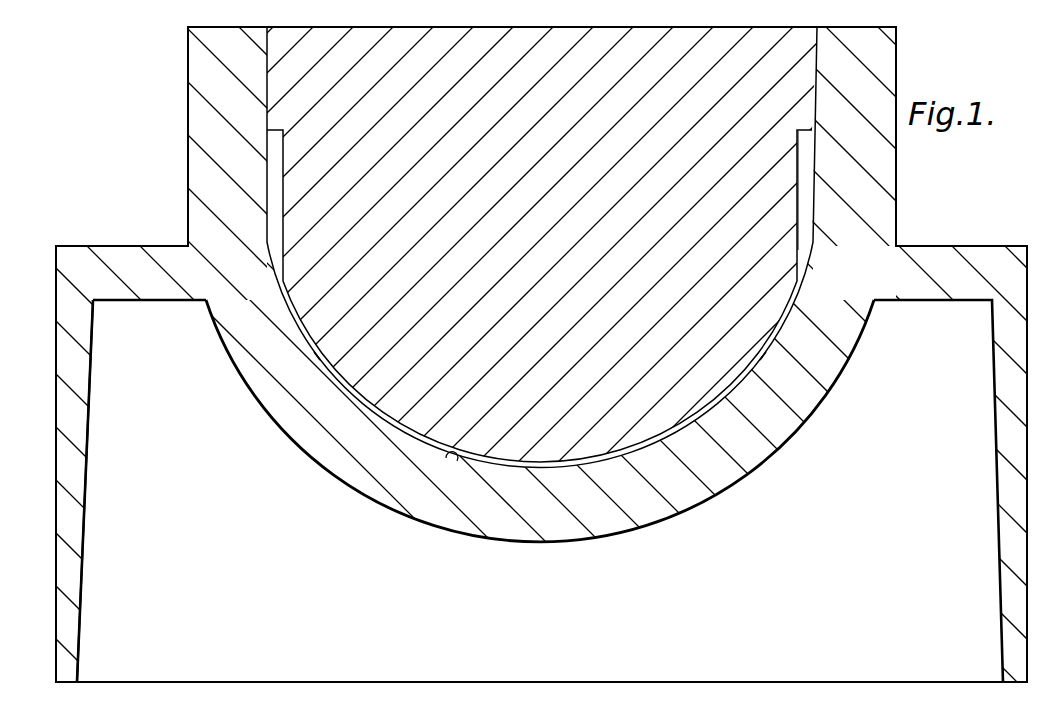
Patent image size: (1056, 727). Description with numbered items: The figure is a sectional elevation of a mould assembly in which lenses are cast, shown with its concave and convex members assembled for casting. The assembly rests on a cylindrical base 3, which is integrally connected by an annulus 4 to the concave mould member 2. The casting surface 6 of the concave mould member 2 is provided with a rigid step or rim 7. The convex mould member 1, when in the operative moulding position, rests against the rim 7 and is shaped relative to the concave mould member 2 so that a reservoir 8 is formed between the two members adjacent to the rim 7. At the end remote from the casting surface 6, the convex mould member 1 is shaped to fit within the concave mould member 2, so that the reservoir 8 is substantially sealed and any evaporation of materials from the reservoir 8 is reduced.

The convex mould member 1 is at (353, 116).
The concave mould member 2 is at (324, 450).
The cylindrical base 3 is at (68, 357).
The annulus 4 is at (132, 268).
The casting surface 6 is at (447, 457).
The rim 7 is at (318, 360).
The reservoir 8 is at (807, 192).